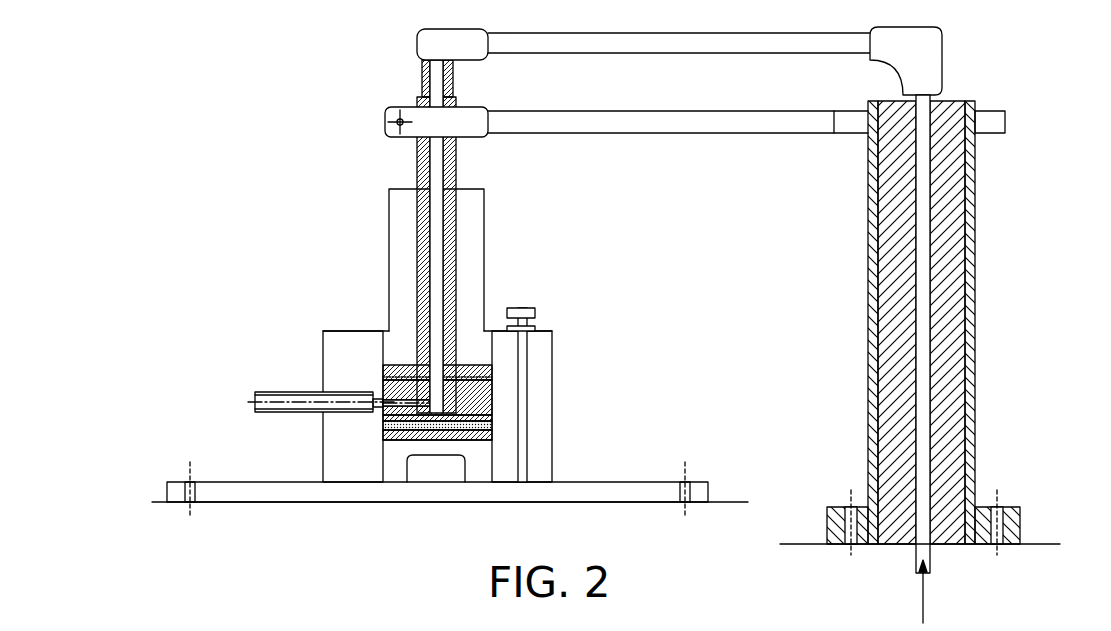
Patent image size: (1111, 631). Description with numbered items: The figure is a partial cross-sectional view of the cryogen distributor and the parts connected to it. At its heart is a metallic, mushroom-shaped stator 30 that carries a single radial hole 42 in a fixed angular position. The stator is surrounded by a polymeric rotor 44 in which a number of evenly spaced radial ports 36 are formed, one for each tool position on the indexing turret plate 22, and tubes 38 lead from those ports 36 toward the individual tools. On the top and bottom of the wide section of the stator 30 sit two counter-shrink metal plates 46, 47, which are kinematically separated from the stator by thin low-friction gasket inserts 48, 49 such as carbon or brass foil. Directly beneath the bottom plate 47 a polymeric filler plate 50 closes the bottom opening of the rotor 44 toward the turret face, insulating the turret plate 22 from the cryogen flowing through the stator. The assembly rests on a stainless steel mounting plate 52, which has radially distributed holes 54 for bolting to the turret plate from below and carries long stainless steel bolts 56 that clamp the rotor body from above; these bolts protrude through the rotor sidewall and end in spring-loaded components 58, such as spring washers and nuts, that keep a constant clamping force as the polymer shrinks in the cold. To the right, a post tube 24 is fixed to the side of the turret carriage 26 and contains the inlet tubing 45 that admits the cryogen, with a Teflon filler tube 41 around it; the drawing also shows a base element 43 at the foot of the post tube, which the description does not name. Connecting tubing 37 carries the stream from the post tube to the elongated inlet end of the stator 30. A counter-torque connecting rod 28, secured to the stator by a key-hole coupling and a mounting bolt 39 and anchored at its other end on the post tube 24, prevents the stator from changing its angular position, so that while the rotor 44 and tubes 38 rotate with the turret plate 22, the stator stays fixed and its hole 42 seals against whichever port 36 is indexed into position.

The turret plate 22 is at (725, 502).
The post tube 24 is at (975, 370).
The turret carriage 26 is at (805, 544).
The connecting rod 28 is at (680, 133).
The stator 30 is at (417, 168).
The radial ports 36 is at (298, 404).
The connecting tubing 37 is at (775, 53).
The tubes 38 is at (272, 392).
The mounting bolt 39 is at (397, 120).
The filler tube 41 is at (950, 290).
The radial hole 42 is at (383, 418).
The flange 43 is at (1020, 520).
The rotor 44 is at (389, 240).
The inlet tubing 45 is at (930, 554).
The top counter-shrink metal plate 46 is at (382, 380).
The bottom counter-shrink metal plate 47 is at (492, 433).
The gasket insert 48 is at (492, 420).
The gasket insert 49 is at (395, 365).
The filler plate 50 is at (465, 465).
The mounting plate 52 is at (300, 502).
The holes 54 is at (186, 502).
The bolts 56 is at (520, 308).
The spring-loaded components 58 is at (535, 328).